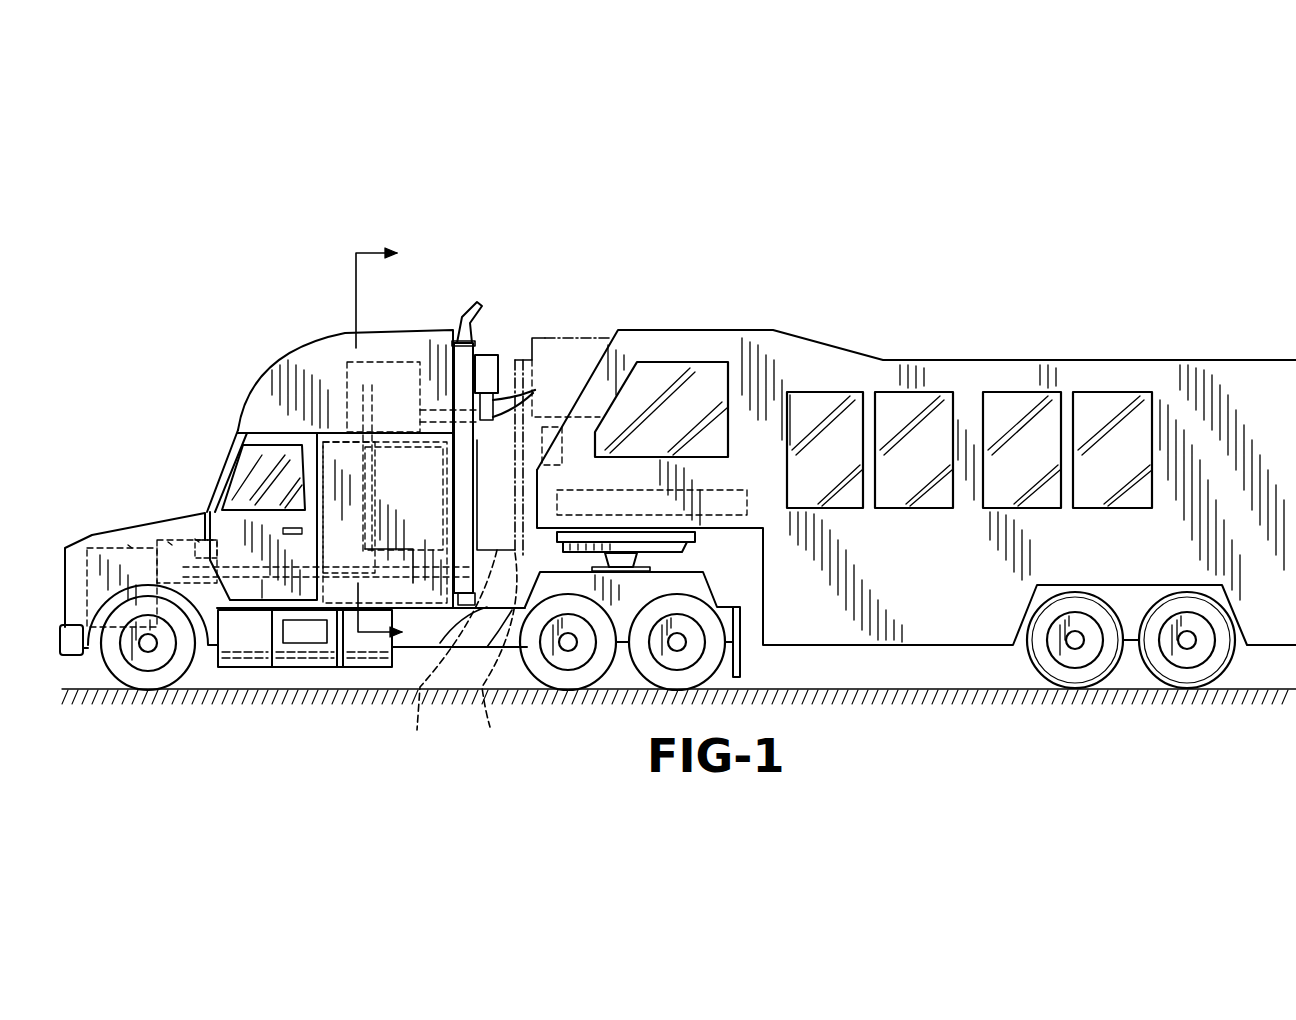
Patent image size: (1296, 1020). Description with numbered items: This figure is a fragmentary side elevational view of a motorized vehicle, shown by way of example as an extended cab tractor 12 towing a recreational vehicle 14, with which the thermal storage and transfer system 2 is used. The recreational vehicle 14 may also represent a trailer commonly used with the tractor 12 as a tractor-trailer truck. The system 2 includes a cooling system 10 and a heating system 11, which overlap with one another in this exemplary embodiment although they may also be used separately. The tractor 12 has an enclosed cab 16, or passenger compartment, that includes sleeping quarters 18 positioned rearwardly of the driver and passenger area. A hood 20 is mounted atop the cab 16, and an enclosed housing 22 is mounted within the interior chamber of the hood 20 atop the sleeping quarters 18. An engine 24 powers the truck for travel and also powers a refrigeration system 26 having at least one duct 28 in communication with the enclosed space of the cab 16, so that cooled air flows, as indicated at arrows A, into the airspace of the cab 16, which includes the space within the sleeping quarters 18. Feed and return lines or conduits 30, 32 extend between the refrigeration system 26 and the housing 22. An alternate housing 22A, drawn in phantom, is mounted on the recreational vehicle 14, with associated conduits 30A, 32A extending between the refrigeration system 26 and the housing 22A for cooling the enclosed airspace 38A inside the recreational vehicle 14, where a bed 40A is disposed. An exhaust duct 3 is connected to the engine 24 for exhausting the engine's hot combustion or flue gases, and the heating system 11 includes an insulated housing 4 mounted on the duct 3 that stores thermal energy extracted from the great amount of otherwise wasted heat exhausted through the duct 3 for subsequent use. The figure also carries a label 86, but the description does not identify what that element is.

The section line 2- 2 is at (242, 275).
The exhaust stack 3 is at (462, 313).
The control unit box 4 is at (487, 353).
The tractor 10 is at (265, 357).
The trailer front portion 11 is at (505, 340).
The hood 12 is at (243, 420).
The trailer 14 is at (993, 358).
The cab 16 is at (232, 450).
The sleeper compartment 18 is at (397, 457).
The roof fairing 20 is at (263, 390).
The sleeper berth region 22 is at (348, 373).
The trailer front compartment 22A is at (590, 338).
The engine component 24 is at (130, 543).
The engine component 26 is at (170, 540).
The engine component 28 is at (197, 537).
The auxiliary power unit system 30 is at (372, 473).
The auxiliary unit housing 32 is at (375, 498).
The fluid line 30A is at (447, 655).
The fluid line 32A is at (492, 653).
The trailer window 38A is at (697, 348).
The trailer unit 40A is at (747, 502).
The conduits 86 is at (528, 399).
The sensor location A is at (247, 560).